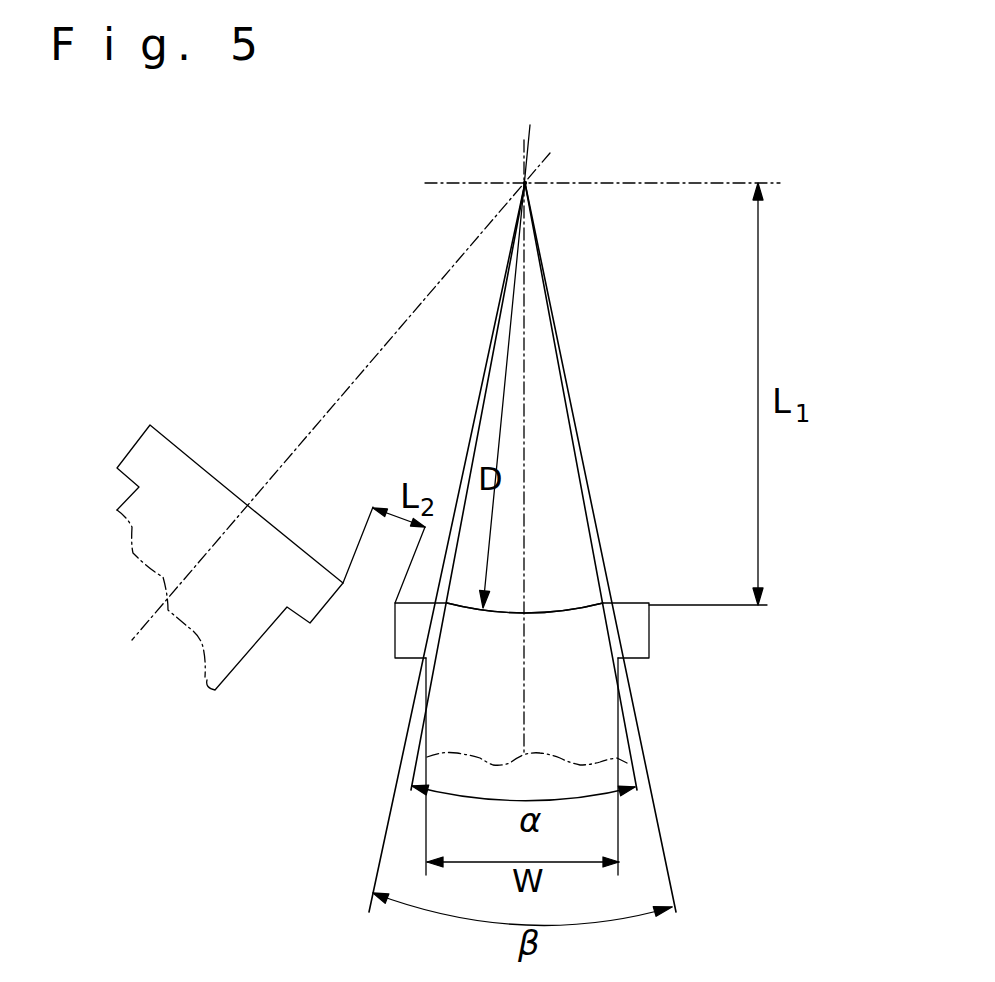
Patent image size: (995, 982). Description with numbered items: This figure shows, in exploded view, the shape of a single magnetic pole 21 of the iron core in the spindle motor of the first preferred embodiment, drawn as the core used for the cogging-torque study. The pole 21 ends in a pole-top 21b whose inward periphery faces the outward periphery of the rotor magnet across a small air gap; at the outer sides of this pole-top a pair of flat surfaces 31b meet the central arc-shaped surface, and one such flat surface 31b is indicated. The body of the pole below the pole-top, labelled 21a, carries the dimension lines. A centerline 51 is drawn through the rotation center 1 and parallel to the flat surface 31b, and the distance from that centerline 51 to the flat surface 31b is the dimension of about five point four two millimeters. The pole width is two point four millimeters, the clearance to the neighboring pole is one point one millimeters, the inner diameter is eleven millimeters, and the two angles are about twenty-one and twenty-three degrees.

The rotation center 1 is at (525, 183).
The centerline 51 is at (735, 183).
The magnetic pole 21 is at (677, 690).
The lens body portion 21a is at (588, 698).
The pole-top 21b is at (630, 632).
The flat surface 31b is at (640, 602).